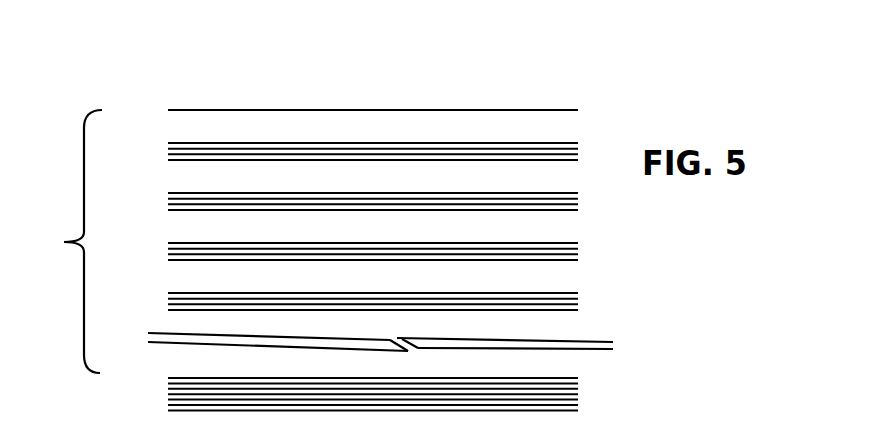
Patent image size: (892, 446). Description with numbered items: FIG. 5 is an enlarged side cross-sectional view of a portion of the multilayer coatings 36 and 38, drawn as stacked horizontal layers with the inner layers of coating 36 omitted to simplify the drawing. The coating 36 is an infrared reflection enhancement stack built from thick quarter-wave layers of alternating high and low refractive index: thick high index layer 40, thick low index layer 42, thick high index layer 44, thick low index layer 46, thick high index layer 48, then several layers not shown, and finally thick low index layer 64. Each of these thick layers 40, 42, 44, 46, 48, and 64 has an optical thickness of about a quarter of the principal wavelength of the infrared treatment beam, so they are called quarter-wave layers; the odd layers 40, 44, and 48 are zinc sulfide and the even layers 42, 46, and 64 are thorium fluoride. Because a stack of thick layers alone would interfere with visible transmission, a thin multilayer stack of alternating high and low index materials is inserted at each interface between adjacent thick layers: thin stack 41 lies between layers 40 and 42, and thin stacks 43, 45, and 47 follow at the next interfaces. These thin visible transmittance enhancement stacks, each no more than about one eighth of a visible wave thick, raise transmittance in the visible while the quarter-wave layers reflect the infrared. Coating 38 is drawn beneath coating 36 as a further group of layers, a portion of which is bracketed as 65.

The multilayer coating 36 is at (316, 243).
The multilayer coating 38 is at (168, 376).
The thick high index layer 40 is at (289, 138).
The thin multilayer stack 41 is at (168, 140).
The thick low index layer 42 is at (432, 189).
The thin multilayer stack 43 is at (168, 190).
The thick high index layer 44 is at (459, 239).
The thin multilayer stack 45 is at (168, 240).
The thick low index layer 46 is at (404, 289).
The thin multilayer stack 47 is at (168, 290).
The thick high index layer 48 is at (375, 339).
The thick low index layer 64 is at (459, 374).
The upper substrate layers 65 is at (581, 378).